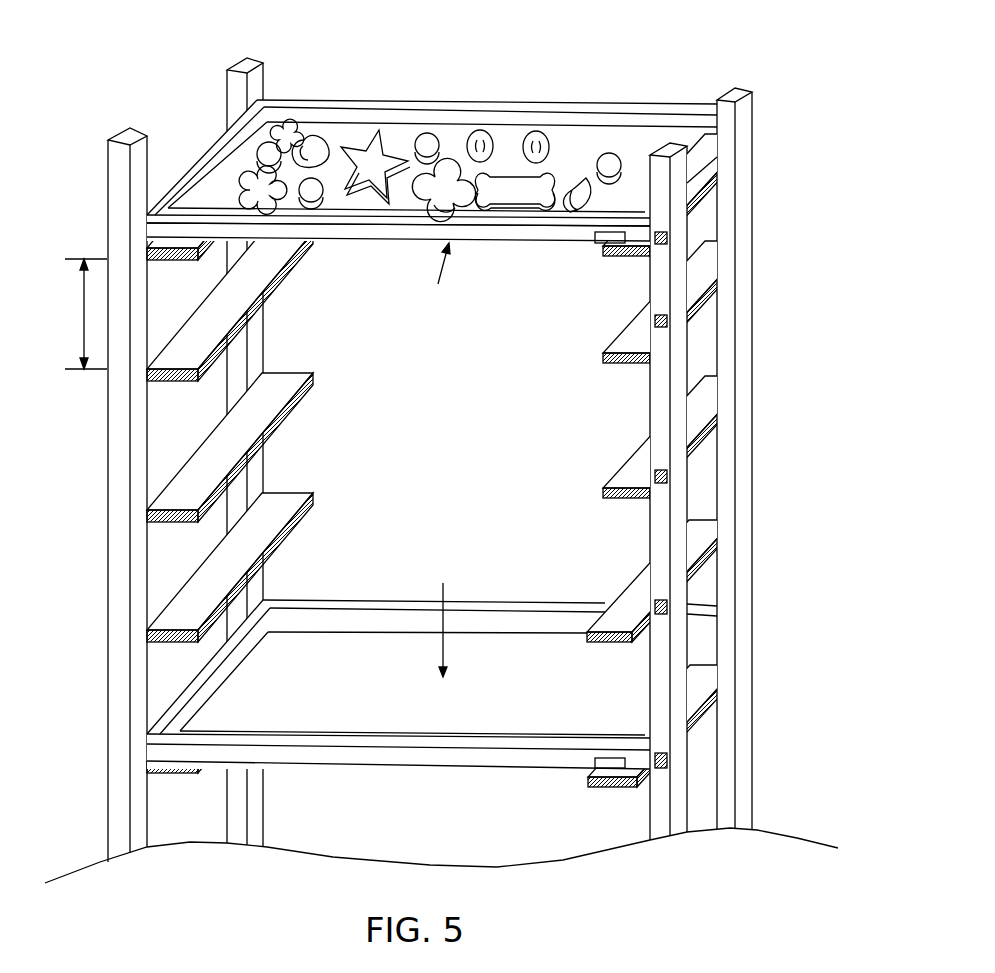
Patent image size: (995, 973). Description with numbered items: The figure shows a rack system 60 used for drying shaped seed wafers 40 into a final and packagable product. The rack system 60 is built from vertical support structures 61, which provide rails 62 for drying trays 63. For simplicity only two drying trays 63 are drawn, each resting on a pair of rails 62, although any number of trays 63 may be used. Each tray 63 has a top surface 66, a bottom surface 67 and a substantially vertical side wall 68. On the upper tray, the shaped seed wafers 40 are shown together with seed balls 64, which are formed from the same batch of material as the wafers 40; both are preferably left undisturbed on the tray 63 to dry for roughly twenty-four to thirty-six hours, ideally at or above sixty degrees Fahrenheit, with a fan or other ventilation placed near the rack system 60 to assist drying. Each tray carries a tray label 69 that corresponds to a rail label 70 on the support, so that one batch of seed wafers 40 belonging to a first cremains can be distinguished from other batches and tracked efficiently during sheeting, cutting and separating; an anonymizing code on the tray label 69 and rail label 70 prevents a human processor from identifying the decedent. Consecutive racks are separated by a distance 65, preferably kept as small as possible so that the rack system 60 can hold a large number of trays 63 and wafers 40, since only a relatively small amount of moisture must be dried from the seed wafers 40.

The shaped seed wafers 40 is at (428, 130).
The rack system 60 is at (430, 452).
The vertical support structures 61 is at (748, 268).
The rails 62 is at (318, 378).
The drying trays 63 is at (588, 156).
The seed balls 64 is at (535, 129).
The distance 65 is at (83, 294).
The top surface 66 is at (445, 618).
The bottom surface 67 is at (440, 276).
The substantially vertical side wall 68 is at (514, 240).
The tray label 69 is at (590, 243).
The rail label 70 is at (659, 244).